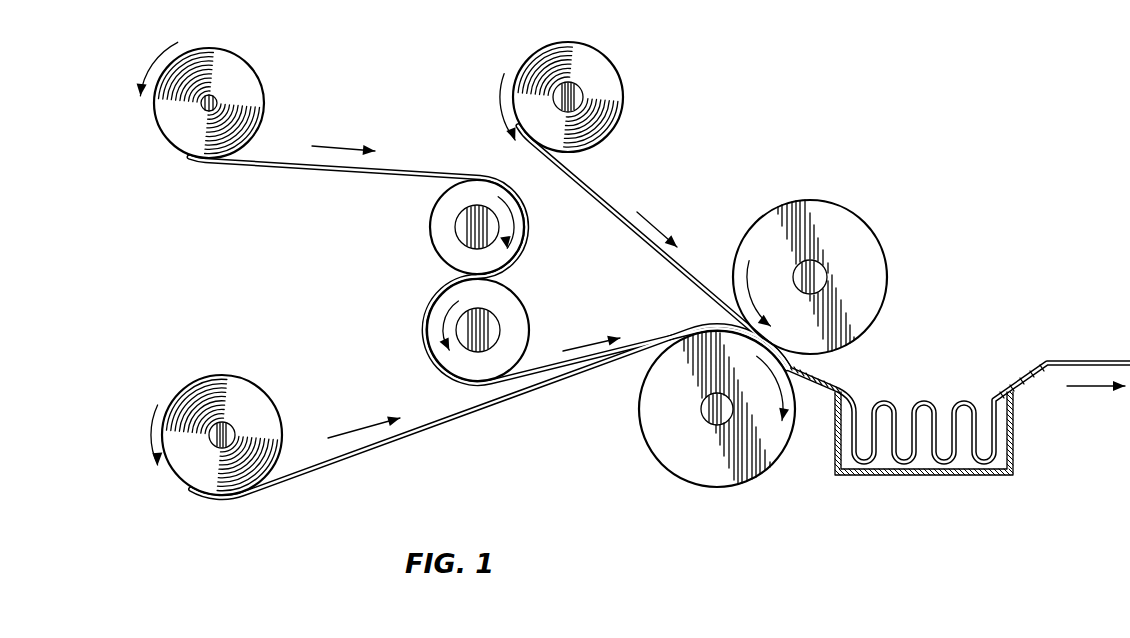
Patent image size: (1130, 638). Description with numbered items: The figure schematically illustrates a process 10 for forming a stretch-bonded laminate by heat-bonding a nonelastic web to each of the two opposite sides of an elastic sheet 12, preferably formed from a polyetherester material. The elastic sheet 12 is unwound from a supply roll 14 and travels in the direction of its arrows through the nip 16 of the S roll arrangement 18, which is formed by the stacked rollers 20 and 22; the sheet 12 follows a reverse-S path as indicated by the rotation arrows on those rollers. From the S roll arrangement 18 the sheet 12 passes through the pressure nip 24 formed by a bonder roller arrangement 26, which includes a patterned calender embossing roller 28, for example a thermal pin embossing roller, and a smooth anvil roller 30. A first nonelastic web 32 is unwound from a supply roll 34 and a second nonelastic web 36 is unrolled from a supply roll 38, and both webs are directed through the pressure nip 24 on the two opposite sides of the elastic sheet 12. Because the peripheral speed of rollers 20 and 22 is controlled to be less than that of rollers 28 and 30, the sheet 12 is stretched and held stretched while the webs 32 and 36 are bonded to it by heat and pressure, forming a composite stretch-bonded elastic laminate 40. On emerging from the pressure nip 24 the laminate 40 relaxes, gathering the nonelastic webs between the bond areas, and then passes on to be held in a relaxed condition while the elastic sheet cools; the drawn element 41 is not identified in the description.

The process for forming a stretch-bonded laminate 10 is at (766, 80).
The elastic sheet 12 is at (347, 172).
The supply roll 14 is at (259, 70).
The nip 16 is at (508, 280).
The S roll arrangement 18 is at (423, 272).
The stacked roller 20 is at (518, 228).
The stacked roller 22 is at (525, 273).
The pressure nip 24 is at (700, 312).
The bonder roller arrangement 26 is at (712, 250).
The patterned calender embossing roller 28 is at (877, 260).
The smooth anvil roller 30 is at (698, 462).
The first nonelastic web 32 is at (606, 198).
The supply roll 34 is at (618, 70).
The second nonelastic web 36 is at (450, 423).
The supply roll 38 is at (225, 375).
The composite stretch-bonded elastic laminate 40 is at (838, 383).
The festoon trough 41 is at (940, 478).